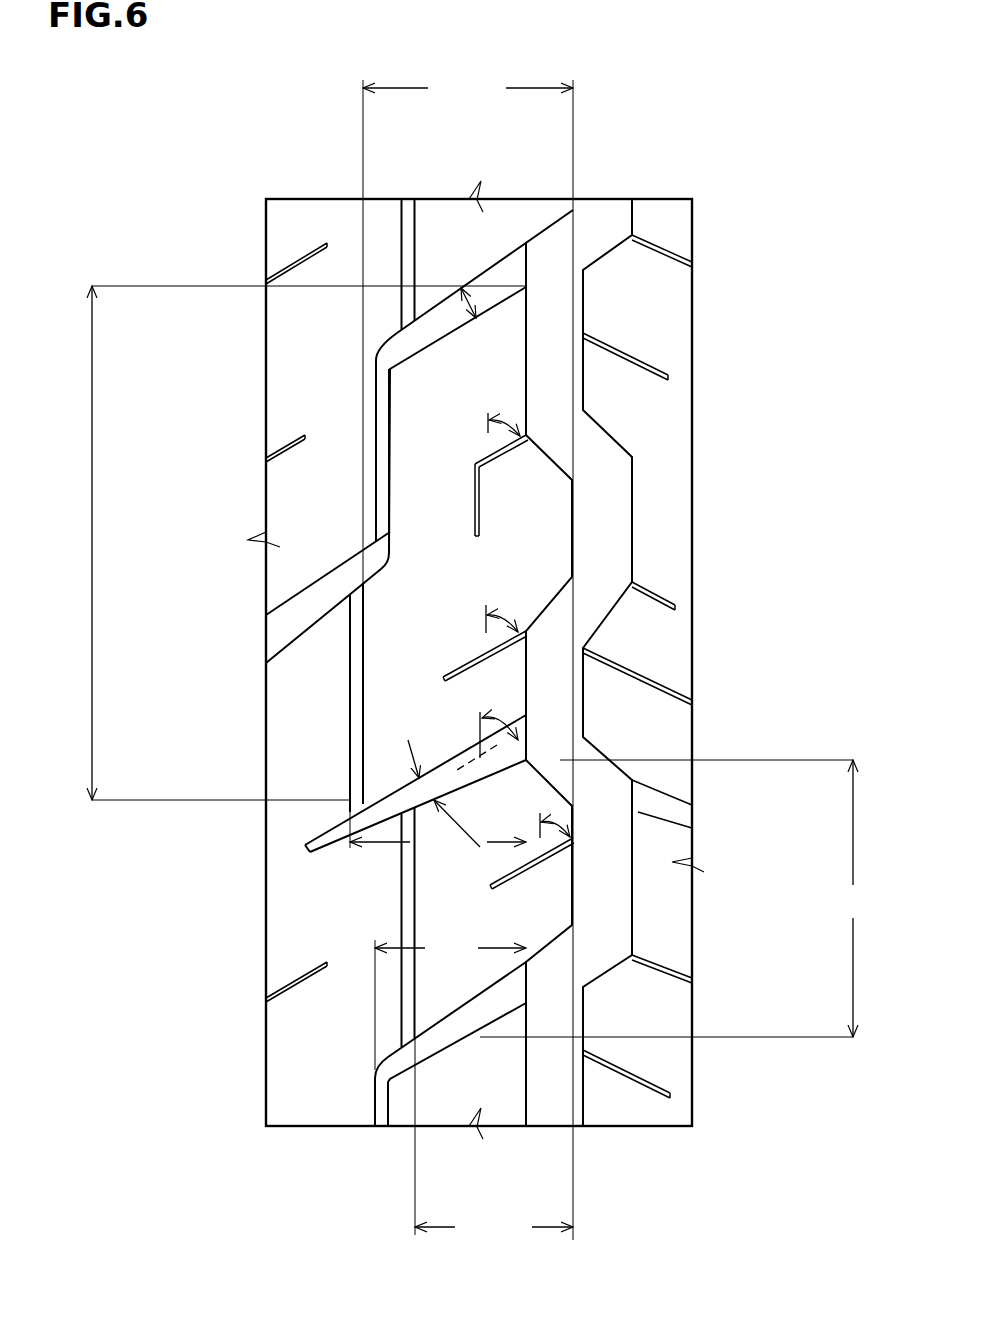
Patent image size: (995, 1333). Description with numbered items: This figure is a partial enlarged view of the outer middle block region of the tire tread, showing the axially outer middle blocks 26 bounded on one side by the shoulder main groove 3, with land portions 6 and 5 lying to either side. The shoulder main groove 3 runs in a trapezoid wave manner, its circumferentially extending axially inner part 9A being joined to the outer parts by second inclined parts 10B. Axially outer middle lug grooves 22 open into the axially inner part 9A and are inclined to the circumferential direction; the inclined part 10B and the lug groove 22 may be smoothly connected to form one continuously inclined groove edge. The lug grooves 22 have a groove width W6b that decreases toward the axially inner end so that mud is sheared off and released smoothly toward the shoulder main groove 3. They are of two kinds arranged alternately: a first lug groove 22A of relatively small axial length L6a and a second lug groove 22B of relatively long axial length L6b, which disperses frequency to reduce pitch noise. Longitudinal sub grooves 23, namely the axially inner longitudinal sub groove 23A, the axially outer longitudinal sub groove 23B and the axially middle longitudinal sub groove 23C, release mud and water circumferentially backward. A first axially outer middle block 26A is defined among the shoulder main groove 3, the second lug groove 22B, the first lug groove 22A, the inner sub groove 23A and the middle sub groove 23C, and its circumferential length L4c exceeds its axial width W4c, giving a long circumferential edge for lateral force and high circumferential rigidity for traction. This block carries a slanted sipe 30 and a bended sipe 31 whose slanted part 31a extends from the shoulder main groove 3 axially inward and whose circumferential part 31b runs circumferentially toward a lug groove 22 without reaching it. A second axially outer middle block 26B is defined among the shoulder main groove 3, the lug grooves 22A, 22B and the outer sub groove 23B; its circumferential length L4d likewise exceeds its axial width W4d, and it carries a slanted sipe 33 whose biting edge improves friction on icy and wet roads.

The shoulder land portion (left) 6 is at (345, 238).
The shoulder main groove 3 is at (556, 268).
The shoulder land portion (right) 5 is at (663, 224).
The second inclined part 10B is at (604, 238).
The axially outer middle lug groove 22 is at (349, 708).
The first lug groove 22A is at (395, 343).
The second lug groove 22B is at (448, 755).
The longitudinal sub grooves 23 is at (270, 703).
The axially inner longitudinal sub groove 23A is at (348, 700).
The axially outer longitudinal sub groove 23B is at (398, 884).
The axially middle longitudinal sub groove 23C is at (371, 484).
The axially outer middle blocks 26 is at (324, 762).
The first axially outer middle block 26A is at (412, 582).
The second axially outer middle block 26B is at (445, 905).
The slanted sipe 30 is at (463, 668).
The bended sipe 31 is at (668, 475).
The slanted part 31a is at (500, 463).
The circumferential part 31b is at (480, 512).
The slanted sipe 33 is at (498, 886).
The axially inner part 9A is at (531, 1081).
The groove width W6b is at (406, 742).
The axial width W4c is at (468, 656).
The axial width W4d is at (494, 1140).
The circumferential length L4c is at (297, 543).
The circumferential length L4d is at (680, 898).
The axial length L6a is at (450, 1001).
The axial length L6b is at (438, 834).